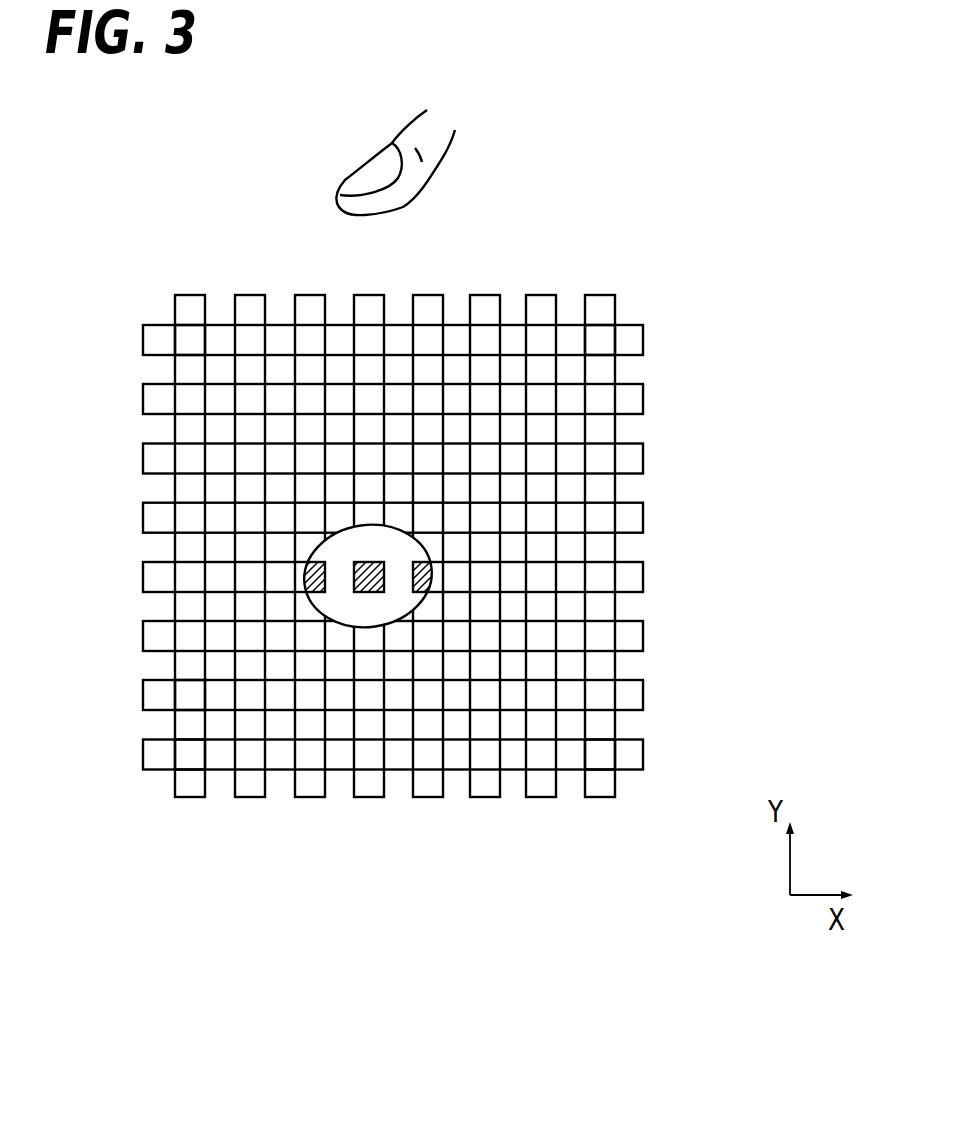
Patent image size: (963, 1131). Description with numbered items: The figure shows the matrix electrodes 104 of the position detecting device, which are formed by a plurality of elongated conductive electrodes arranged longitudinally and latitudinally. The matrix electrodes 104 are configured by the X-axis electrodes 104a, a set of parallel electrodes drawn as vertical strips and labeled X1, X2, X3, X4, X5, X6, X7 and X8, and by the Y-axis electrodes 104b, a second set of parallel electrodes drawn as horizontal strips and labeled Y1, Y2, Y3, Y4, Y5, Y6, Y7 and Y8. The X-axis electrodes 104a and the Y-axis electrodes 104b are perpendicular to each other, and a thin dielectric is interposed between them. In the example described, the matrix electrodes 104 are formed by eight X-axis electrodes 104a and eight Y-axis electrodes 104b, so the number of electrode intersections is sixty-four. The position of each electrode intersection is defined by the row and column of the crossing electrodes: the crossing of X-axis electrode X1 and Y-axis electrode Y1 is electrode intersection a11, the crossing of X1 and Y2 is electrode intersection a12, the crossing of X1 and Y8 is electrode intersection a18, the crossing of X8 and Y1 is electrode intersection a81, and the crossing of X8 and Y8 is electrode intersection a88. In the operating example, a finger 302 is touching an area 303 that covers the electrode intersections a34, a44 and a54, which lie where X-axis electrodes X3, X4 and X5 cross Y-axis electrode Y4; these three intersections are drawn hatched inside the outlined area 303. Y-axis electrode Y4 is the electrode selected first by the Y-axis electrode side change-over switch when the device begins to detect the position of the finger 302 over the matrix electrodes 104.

The matrix electrodes 104 is at (495, 572).
The X-axis electrodes 104a is at (394, 647).
The Y-axis electrodes 104b is at (495, 543).
The finger 302 is at (428, 123).
The area 303 is at (400, 624).
The electrode intersection a11 is at (190, 753).
The electrode intersection a12 is at (190, 693).
The electrode intersection a18 is at (190, 338).
The electrode intersection a34 is at (310, 582).
The electrode intersection a44 is at (372, 562).
The electrode intersection a54 is at (425, 570).
The electrode intersection a81 is at (600, 760).
The electrode intersection a88 is at (600, 337).
The X-axis electrode X1 is at (189, 797).
The X-axis electrode X2 is at (249, 797).
The X-axis electrode X3 is at (309, 797).
The X-axis electrode X4 is at (368, 797).
The X-axis electrode X5 is at (427, 797).
The X-axis electrode X6 is at (484, 797).
The X-axis electrode X7 is at (540, 797).
The X-axis electrode X8 is at (600, 591).
The Y-axis electrode Y1 is at (440, 753).
The Y-axis electrode Y2 is at (643, 695).
The Y-axis electrode Y3 is at (643, 636).
The Y-axis electrode Y4 is at (643, 577).
The Y-axis electrode Y5 is at (643, 518).
The Y-axis electrode Y6 is at (643, 458).
The Y-axis electrode Y7 is at (643, 399).
The Y-axis electrode Y8 is at (643, 340).